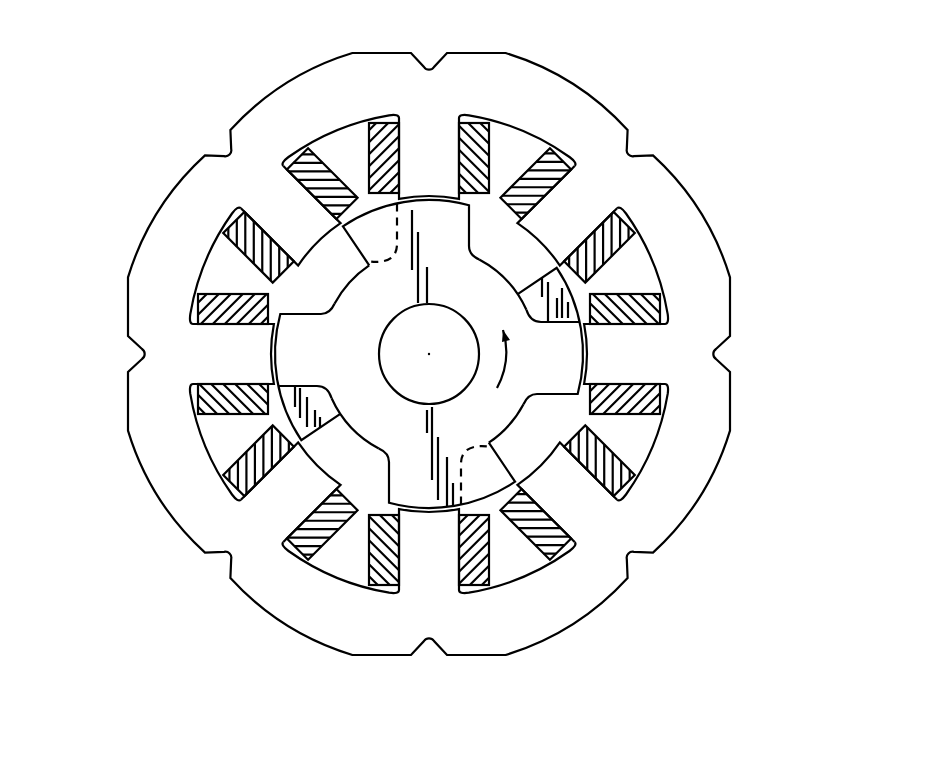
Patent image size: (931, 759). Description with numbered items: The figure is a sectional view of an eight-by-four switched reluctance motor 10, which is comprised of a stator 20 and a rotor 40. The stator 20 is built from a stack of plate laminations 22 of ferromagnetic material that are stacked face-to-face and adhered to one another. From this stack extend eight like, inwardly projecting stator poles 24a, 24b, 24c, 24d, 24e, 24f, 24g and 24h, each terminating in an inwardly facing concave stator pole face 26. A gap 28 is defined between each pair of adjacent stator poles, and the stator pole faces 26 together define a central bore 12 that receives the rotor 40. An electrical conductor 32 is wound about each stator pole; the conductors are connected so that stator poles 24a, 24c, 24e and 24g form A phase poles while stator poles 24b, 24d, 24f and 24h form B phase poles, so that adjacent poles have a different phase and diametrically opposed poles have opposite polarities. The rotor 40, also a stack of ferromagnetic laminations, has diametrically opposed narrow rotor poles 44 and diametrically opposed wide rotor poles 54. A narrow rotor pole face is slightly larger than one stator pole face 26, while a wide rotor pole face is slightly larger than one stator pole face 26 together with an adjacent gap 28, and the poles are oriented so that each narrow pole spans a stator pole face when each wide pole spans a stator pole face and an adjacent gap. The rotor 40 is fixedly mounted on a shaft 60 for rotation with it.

The motor 10 is at (690, 76).
The central bore 12 is at (558, 416).
The stator 20 is at (729, 272).
The plate laminations 22 is at (541, 93).
The stator pole 24a is at (427, 142).
The stator pole 24b is at (580, 207).
The stator pole 24c is at (637, 360).
The stator pole 24d is at (583, 500).
The stator pole 24e is at (434, 565).
The stator pole 24f is at (282, 497).
The stator pole 24g is at (223, 360).
The stator pole 24h is at (282, 206).
The stator pole face 26 is at (308, 258).
The gap 28 is at (518, 150).
The electrical conductor 32 is at (312, 172).
The rotor 40 is at (298, 338).
The narrow rotor pole 44 is at (592, 327).
The wide rotor pole 54 is at (441, 205).
The shaft 60 is at (401, 357).